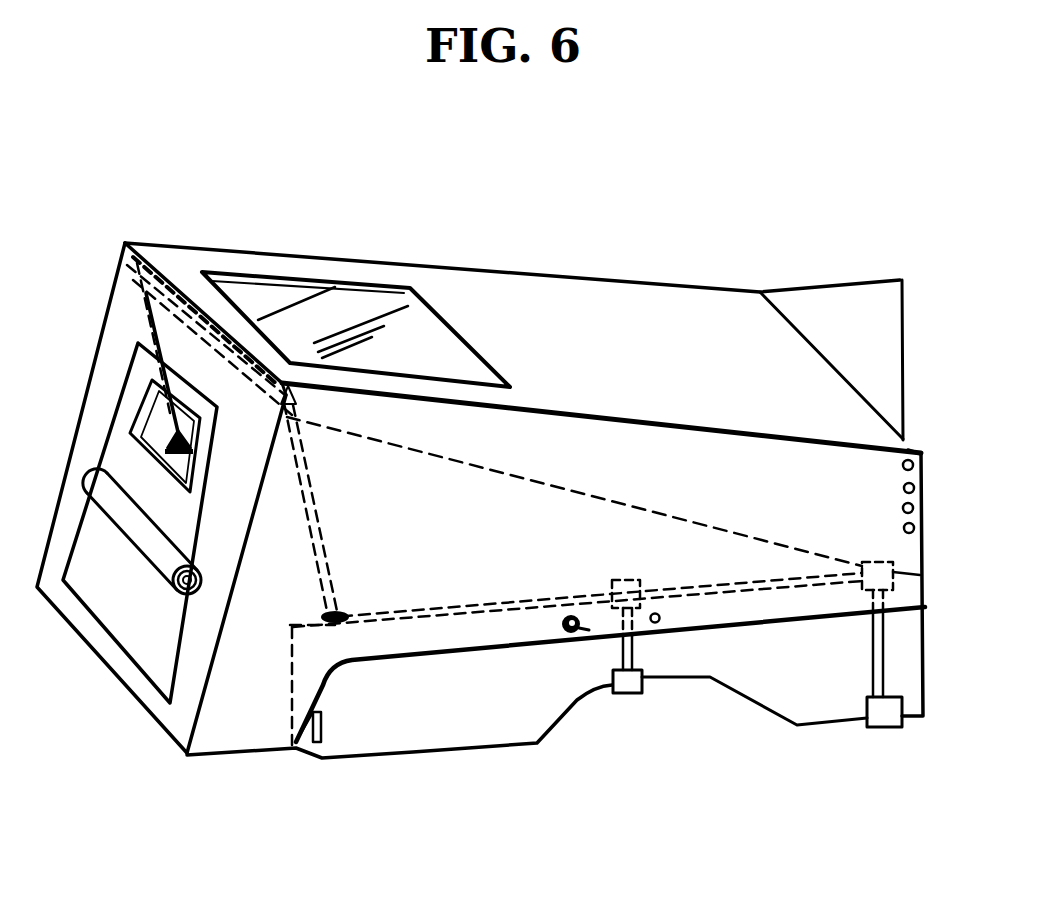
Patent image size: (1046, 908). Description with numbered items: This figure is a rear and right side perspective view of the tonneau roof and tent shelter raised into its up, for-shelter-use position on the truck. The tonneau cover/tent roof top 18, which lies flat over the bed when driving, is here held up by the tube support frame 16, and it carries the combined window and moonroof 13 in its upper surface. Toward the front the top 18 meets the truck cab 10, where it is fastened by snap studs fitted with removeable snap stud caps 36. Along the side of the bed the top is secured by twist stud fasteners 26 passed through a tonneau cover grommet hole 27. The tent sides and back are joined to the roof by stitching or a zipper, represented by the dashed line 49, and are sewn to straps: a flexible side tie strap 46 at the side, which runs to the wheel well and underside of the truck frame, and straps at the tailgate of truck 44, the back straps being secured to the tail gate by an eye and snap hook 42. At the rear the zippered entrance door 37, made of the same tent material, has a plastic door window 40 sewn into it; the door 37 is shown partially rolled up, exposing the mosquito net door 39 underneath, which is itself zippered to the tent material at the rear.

The truck cab 10 is at (803, 302).
The tonneau top combined window and moonroof 13 is at (328, 307).
The tube support frame 16 is at (243, 355).
The tonneau cover/tent roof top 18 is at (387, 278).
The twist stud fastener 26 is at (578, 633).
The tonneau cover grommet hole 27 is at (656, 623).
The removeable snap stud cap 36 is at (902, 280).
The enclosure entrance door 37 is at (118, 455).
The mosquito net door 39 is at (76, 568).
The door window 40 is at (163, 420).
The eye and snap hook 42 is at (199, 756).
The tailgate of truck 44 is at (248, 398).
The flexible side tie strap 46 is at (888, 727).
The zipper or stitching broken line 49 is at (401, 447).